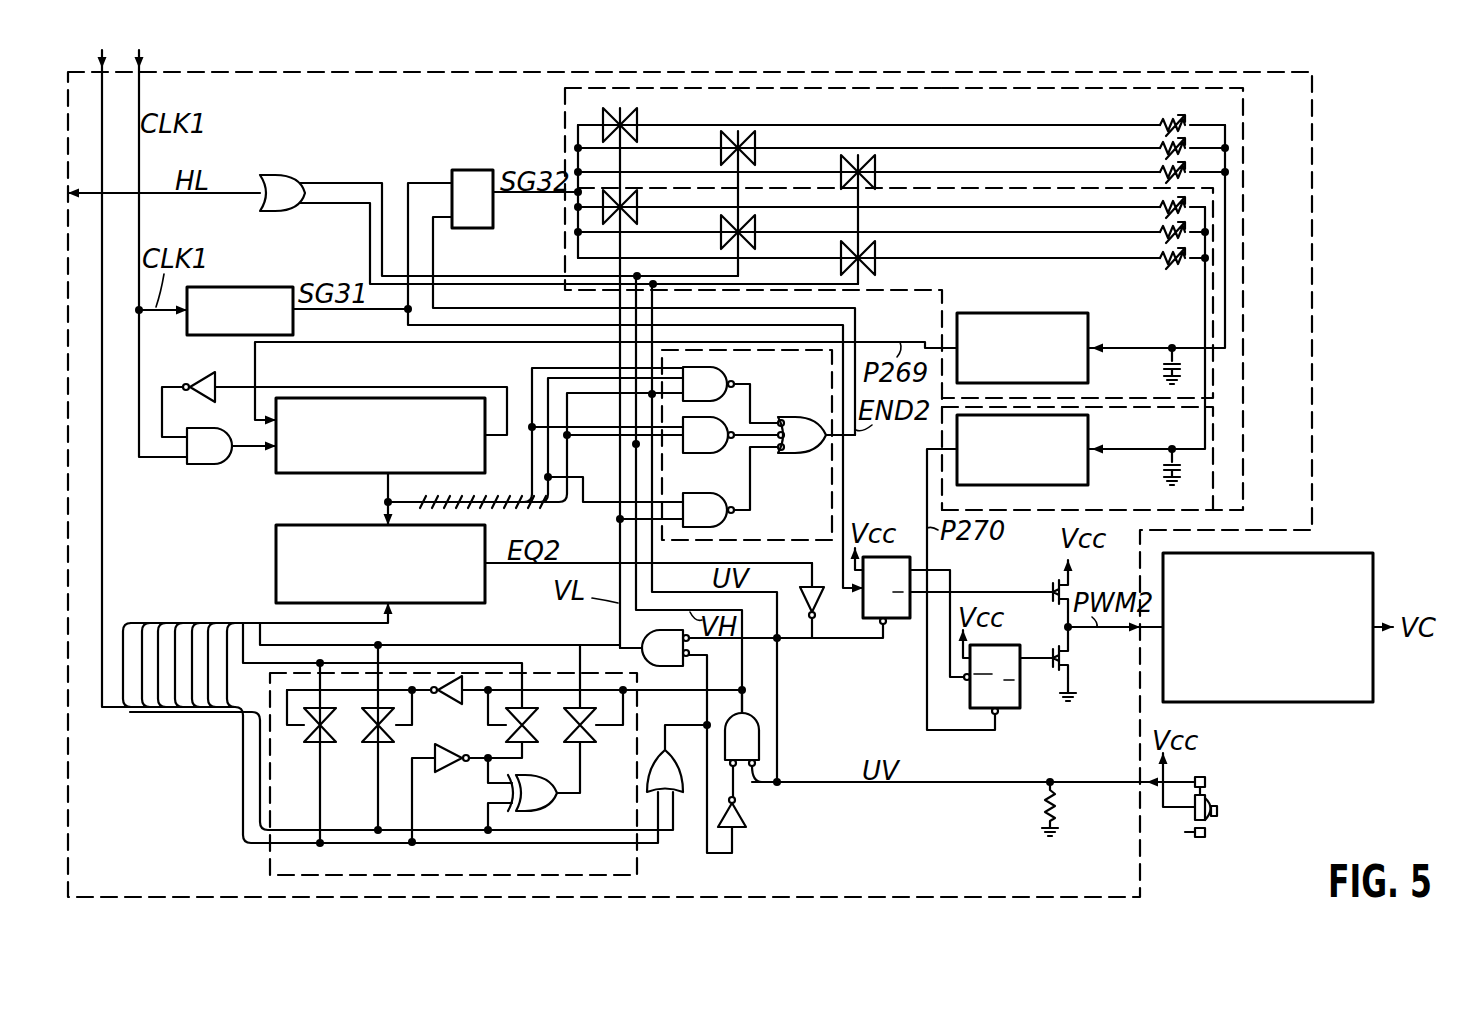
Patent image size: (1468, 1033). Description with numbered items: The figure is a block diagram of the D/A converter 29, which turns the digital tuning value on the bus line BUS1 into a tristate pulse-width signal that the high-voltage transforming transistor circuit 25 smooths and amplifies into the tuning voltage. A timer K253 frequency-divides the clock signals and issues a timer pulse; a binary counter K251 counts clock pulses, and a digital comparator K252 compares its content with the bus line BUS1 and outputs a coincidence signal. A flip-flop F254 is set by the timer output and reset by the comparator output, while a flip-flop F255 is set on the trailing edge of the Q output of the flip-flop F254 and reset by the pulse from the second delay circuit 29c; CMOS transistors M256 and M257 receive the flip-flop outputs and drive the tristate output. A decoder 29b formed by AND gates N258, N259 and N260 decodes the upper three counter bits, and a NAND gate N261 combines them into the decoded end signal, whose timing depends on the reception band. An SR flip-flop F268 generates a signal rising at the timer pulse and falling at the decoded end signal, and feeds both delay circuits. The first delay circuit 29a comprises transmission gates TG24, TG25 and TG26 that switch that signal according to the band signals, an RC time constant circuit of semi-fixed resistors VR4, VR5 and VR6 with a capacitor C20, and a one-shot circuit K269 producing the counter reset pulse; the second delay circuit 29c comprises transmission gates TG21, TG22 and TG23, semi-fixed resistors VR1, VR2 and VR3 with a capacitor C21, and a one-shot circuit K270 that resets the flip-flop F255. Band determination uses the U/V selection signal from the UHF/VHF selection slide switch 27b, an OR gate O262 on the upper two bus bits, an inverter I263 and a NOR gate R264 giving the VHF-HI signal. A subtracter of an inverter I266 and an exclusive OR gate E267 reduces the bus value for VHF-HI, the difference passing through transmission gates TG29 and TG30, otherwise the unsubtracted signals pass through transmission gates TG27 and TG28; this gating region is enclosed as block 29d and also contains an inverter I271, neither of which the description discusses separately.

The high-voltage transforming transistor circuit 25 is at (1318, 552).
The UHF/VHF selection slide switch 27b is at (1216, 800).
The D/A converter 29 is at (1140, 882).
The first delay circuit 29a is at (565, 254).
The decoder 29b is at (835, 485).
The second delay circuit 29c is at (1243, 135).
The output gate section 29d is at (270, 862).
The bus line BUS1 is at (102, 472).
The transmission gate TG21 is at (638, 113).
The transmission gate TG22 is at (757, 143).
The transmission gate TG23 is at (877, 166).
The transmission gate TG24 is at (640, 216).
The transmission gate TG25 is at (758, 238).
The transmission gate TG26 is at (880, 265).
The transmission gate TG27 is at (310, 745).
The transmission gate TG28 is at (368, 745).
The transmission gate TG29 is at (527, 660).
The transmission gate TG30 is at (585, 745).
The semi-fixed resistor VR1 is at (1168, 118).
The semi-fixed resistor VR2 is at (1168, 143).
The semi-fixed resistor VR3 is at (1168, 168).
The semi-fixed resistor VR4 is at (1166, 205).
The semi-fixed resistor VR5 is at (1166, 231).
The semi-fixed resistor VR6 is at (1170, 258).
The SR flip-flop F268 is at (467, 170).
The timer K253 is at (258, 291).
The binary counter K251 is at (274, 462).
The digital comparator K252 is at (274, 552).
The one-shot circuit K269 is at (1075, 313).
The one-shot circuit K270 is at (1043, 486).
The capacitor C20 is at (1163, 372).
The capacitor C21 is at (1163, 473).
The AND gate N258 is at (740, 370).
The AND gate N259 is at (730, 450).
The AND gate N260 is at (735, 512).
The NAND gate N261 is at (830, 448).
The flip-flop F254 is at (900, 624).
The flip-flop F255 is at (1000, 714).
The CMOS transistor M256 is at (1052, 585).
The CMOS transistor M257 is at (1070, 665).
The inverter I271 is at (444, 698).
The inverter I266 is at (444, 770).
The exclusive OR gate E267 is at (540, 815).
The OR gate O262 is at (690, 780).
The inverter I263 is at (744, 814).
The NOR gate R264 is at (754, 782).